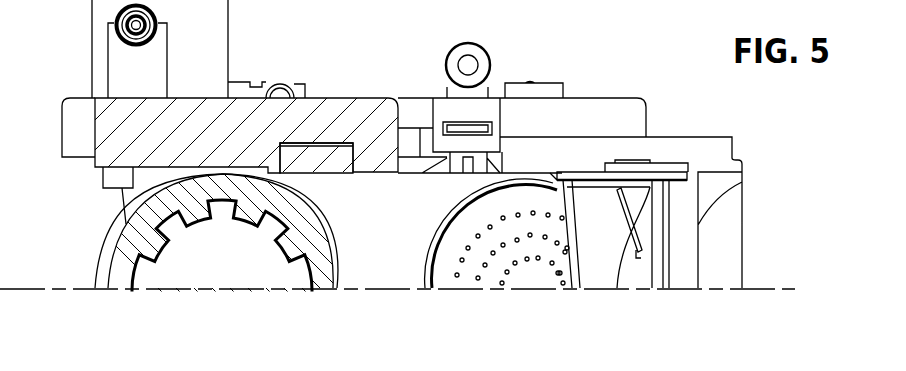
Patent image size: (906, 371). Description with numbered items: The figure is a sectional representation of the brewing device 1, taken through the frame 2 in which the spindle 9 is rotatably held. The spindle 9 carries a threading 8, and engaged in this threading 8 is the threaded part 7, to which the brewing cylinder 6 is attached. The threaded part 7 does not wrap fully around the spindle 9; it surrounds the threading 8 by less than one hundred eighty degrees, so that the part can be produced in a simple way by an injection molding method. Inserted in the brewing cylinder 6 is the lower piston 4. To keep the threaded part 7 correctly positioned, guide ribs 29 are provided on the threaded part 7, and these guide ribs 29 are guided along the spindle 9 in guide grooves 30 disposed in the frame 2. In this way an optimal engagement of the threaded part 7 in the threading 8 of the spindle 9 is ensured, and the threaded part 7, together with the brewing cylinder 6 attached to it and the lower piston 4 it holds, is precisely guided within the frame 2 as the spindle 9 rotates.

The brewing device 1 is at (630, 49).
The frame 2 is at (238, 118).
The lower piston 4 is at (530, 272).
The brewing cylinder 6 is at (432, 287).
The threaded part 7 is at (405, 265).
The threading 8 is at (163, 200).
The spindle 9 is at (130, 263).
The guide ribs 29 is at (322, 153).
The guide grooves 30 is at (373, 128).